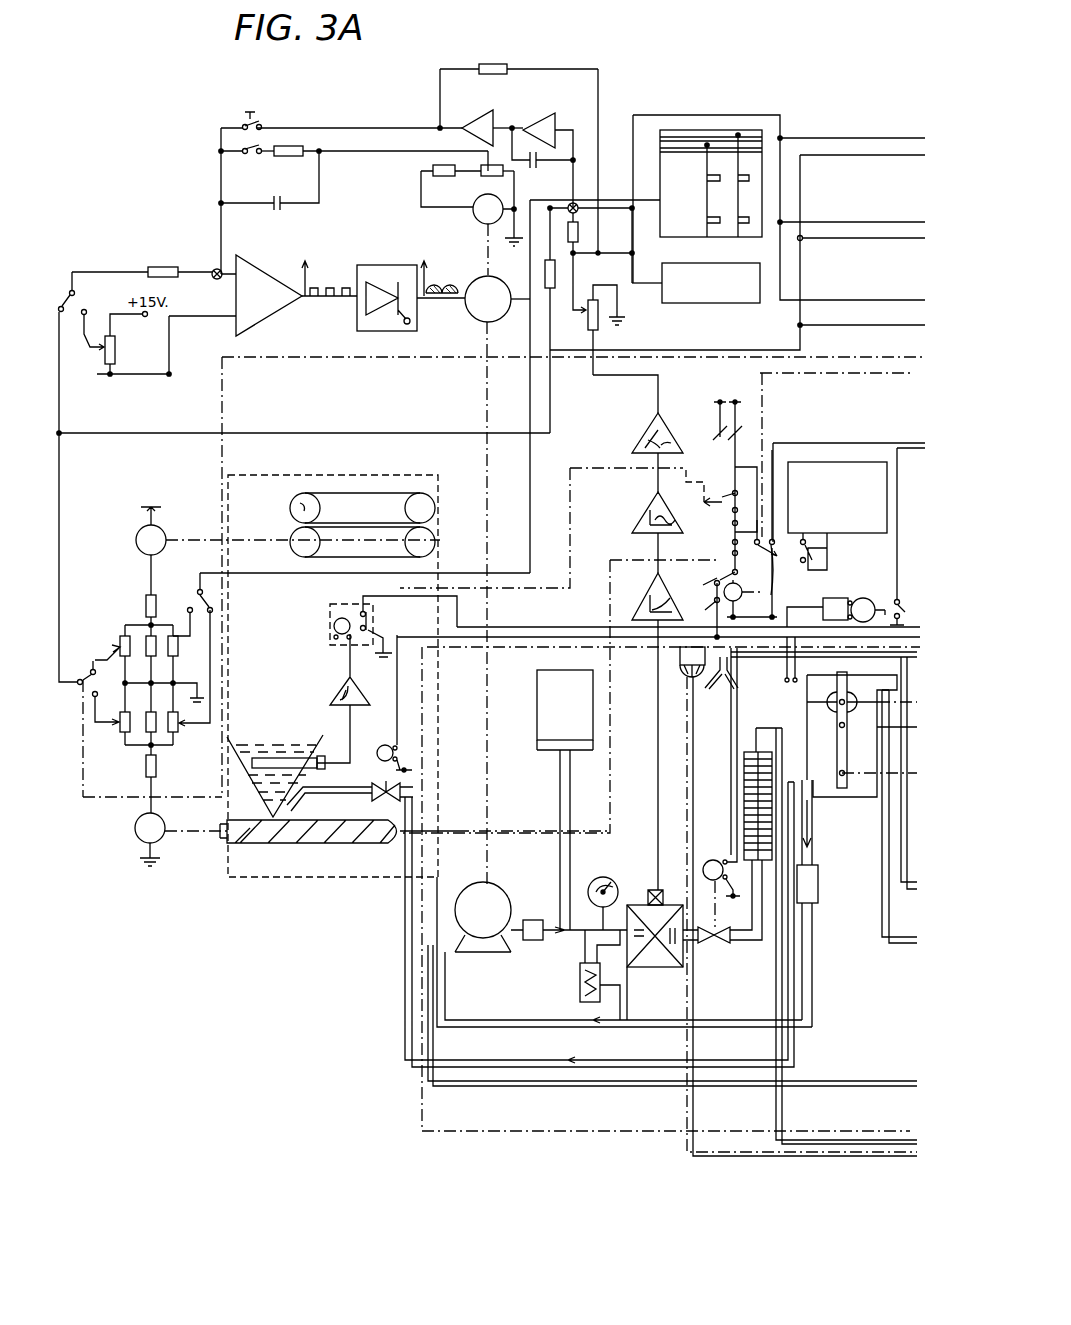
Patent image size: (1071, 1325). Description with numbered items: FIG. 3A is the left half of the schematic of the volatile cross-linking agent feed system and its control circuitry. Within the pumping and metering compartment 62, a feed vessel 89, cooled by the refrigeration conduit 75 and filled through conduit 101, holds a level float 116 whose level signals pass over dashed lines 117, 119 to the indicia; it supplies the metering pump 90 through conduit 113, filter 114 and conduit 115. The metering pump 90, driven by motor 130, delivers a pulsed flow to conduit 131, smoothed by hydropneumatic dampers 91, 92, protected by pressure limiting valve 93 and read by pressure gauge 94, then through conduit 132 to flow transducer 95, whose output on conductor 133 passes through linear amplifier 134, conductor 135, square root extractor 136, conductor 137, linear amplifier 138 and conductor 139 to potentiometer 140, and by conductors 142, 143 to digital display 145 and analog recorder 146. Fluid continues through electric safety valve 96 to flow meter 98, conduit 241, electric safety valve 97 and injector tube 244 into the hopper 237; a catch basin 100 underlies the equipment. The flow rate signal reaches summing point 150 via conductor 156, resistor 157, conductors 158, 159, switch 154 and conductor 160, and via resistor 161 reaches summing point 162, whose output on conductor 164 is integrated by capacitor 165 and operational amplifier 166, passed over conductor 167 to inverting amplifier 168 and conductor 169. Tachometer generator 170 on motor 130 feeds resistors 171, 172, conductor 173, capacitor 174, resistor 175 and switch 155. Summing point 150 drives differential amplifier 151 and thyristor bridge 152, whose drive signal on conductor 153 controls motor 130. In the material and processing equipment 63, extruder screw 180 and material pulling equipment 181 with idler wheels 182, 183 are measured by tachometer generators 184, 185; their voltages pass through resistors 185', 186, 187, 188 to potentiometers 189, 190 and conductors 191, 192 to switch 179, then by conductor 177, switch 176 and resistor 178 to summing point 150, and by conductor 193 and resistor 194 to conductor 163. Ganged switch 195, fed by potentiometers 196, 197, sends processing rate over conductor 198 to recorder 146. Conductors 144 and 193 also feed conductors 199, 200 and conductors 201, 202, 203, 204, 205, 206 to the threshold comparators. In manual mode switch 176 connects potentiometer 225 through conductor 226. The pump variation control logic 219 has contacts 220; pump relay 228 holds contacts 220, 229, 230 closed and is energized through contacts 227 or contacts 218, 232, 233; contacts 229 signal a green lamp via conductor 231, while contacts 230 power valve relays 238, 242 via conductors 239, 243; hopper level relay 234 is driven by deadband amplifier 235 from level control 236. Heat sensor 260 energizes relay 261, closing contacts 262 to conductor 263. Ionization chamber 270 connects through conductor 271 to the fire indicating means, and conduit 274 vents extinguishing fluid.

The pumping and metering compartment 62 is at (490, 1131).
The material and processing equipment 63 is at (265, 877).
The conduit 75 is at (905, 945).
The feed vessel 89 is at (862, 798).
The metering pump 90 is at (511, 895).
The hydropneumatic damper 91 is at (542, 940).
The hydropneumatic damper 92 is at (537, 700).
The pressure limiting valve 93 is at (578, 987).
The pressure gauge 94 is at (612, 877).
The flow transducer 95 is at (638, 971).
The electric safety valve 96 is at (715, 945).
The electric safety valve 97 is at (380, 800).
The flow meter 98 is at (744, 776).
The catch basin 100 is at (878, 1077).
The conduit 101 is at (910, 844).
The conduit 113 is at (812, 840).
The filter 114 is at (818, 886).
The conduit 115 is at (812, 976).
The level float 116 is at (837, 758).
The dashed line 117 is at (906, 813).
The dashed line 119 is at (915, 767).
The motor 130 is at (478, 266).
The conduit 131 is at (532, 951).
The conduit 132 is at (611, 946).
The conductor 133 is at (657, 808).
The linear amplifier 134 is at (650, 583).
The conductor 135 is at (655, 548).
The square root extractor 136 is at (640, 527).
The conductor 137 is at (653, 461).
The linear amplifier 138 is at (644, 436).
The conductor 139 is at (658, 378).
The potentiometer 140 is at (600, 330).
The conductor 142 is at (597, 255).
The display input line 143 is at (644, 285).
The conductor 144 is at (646, 222).
The digital display 145 is at (695, 311).
The analog recorder 146 is at (692, 240).
The summing point 150 is at (214, 279).
The differential amplifier 151 is at (270, 265).
The thyristor bridge 152 is at (394, 262).
The conductor 153 is at (433, 304).
The switch 154 is at (255, 116).
The switch 155 is at (257, 150).
The conductor 156 is at (600, 92).
The resistor 157 is at (482, 64).
The conductor 158 is at (440, 100).
The conductor 159 is at (344, 125).
The conductor 160 is at (221, 193).
The resistor 161 is at (574, 225).
The summing point 162 is at (591, 214).
The conductor 163 is at (548, 244).
The conductor 164 is at (573, 125).
The capacitor 165 is at (533, 169).
The operational amplifier 166 is at (541, 110).
The conductor 167 is at (501, 122).
The inverting amplifier 168 is at (461, 133).
The conductor 169 is at (468, 120).
The tachometer generator 170 is at (474, 220).
The resistor 171 is at (429, 181).
The resistor 172 is at (489, 178).
The conductor 173 is at (390, 158).
The capacitor 174 is at (282, 209).
The resistor 175 is at (279, 158).
The switch 176 is at (72, 310).
The conductor 177 is at (59, 403).
The resistor 178 is at (174, 265).
The switch 179 is at (81, 678).
The extruder screw 180 is at (318, 848).
The material pulling equipment 181 is at (434, 506).
The idler wheel 182 is at (293, 552).
The idler wheel 183 is at (432, 553).
The tachometer generator 184 is at (136, 831).
The tachometer generator 185 is at (166, 551).
The resistor 185' is at (168, 784).
The resistor 186 is at (162, 721).
The resistor 187 is at (146, 600).
The resistor 188 is at (154, 656).
The potentiometer 189 is at (136, 716).
The potentiometer 190 is at (120, 636).
The conductor 191 is at (100, 722).
The conductor 192 is at (102, 647).
The conductor 193 is at (335, 432).
The resistor 194 is at (553, 289).
The switch 195 is at (198, 592).
The potentiometer 196 is at (178, 732).
The potentiometer 197 is at (178, 650).
The conductor 198 is at (289, 578).
The conductor 199 is at (722, 115).
The conductor 200 is at (696, 351).
The conductor 201 is at (897, 136).
The conductor 202 is at (892, 221).
The conductor 203 is at (892, 300).
The conductor 204 is at (900, 160).
The conductor 205 is at (896, 239).
The conductor 206 is at (897, 328).
The contact set 218 is at (733, 533).
The metering pump variation control logic 219 is at (844, 462).
The contact set 220 is at (819, 549).
The potentiometer 225 is at (115, 346).
The conductor 226 is at (86, 347).
The switch contacts 227 is at (772, 575).
The relay 228 is at (743, 597).
The contacts 229 is at (779, 551).
The contacts 230 is at (705, 606).
The conductor 231 is at (844, 439).
The contact set 232 is at (714, 578).
The contact set 233 is at (722, 494).
The hopper level relay 234 is at (351, 598).
The deadband amplifier 235 is at (336, 690).
The level control 236 is at (280, 755).
The hopper 237 is at (252, 780).
The relay 238 is at (711, 858).
The conductor 239 is at (732, 737).
The conduit 241 is at (496, 1058).
The relay 242 is at (388, 742).
The conductor 243 is at (397, 693).
The injector tube 244 is at (312, 793).
The heat sensor 260 is at (789, 687).
The relay 261 is at (830, 603).
The contact set 262 is at (900, 600).
The conductor 263 is at (893, 542).
The ionization chamber 270 is at (684, 678).
The conductor 271 is at (737, 1163).
The conduit 274 is at (732, 667).